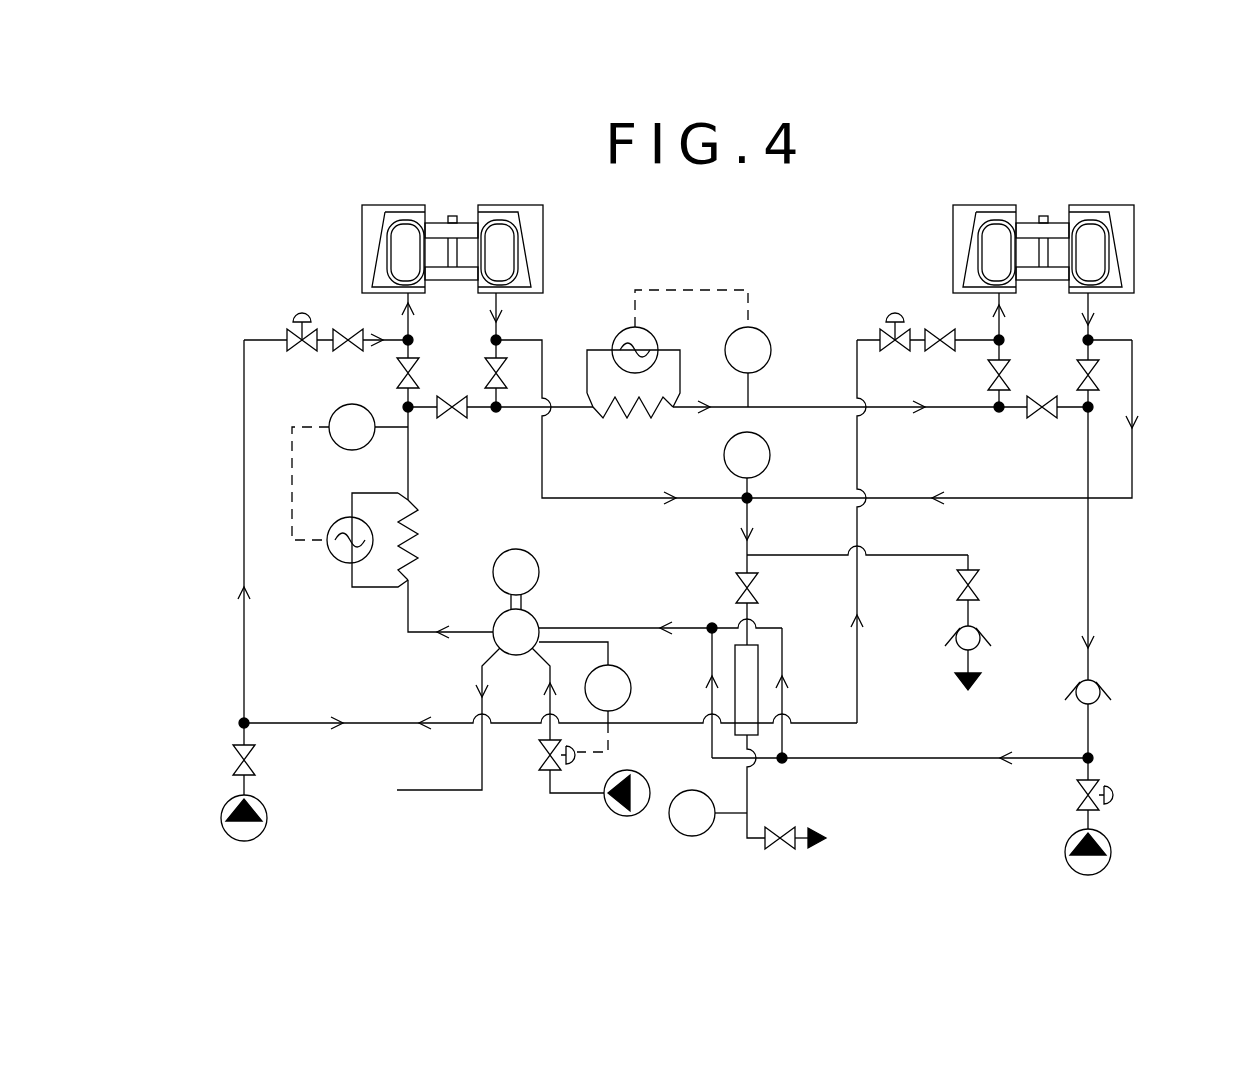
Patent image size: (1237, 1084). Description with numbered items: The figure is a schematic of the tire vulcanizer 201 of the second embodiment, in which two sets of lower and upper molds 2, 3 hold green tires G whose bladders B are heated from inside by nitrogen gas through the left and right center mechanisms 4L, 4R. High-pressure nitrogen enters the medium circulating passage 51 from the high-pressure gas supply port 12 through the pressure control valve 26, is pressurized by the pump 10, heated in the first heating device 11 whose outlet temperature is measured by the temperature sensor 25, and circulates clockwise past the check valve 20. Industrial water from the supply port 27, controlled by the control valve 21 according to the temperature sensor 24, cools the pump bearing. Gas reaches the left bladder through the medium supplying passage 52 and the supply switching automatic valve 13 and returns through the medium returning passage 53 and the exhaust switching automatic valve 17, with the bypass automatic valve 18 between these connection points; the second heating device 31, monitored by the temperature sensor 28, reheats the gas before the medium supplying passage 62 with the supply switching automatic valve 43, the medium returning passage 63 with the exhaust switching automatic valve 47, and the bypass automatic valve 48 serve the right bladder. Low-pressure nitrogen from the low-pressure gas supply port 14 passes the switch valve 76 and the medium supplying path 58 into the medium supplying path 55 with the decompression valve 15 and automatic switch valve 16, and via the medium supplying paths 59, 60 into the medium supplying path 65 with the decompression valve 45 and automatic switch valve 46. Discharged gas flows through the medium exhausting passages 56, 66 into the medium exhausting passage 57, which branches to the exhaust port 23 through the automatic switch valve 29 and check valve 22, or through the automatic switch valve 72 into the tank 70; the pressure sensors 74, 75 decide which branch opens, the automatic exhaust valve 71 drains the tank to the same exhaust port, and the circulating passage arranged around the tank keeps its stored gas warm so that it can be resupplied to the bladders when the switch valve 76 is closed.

The tire vulcanizer 201 is at (695, 245).
The lower mold 2 is at (684, 220).
The upper mold 3 is at (1088, 227).
The left center mechanism 4L is at (453, 214).
The right center mechanism 4R is at (1043, 214).
The green tire G is at (382, 240).
The bladder B is at (500, 250).
The pump 10 is at (496, 620).
The first heating device 11 is at (368, 589).
The high-pressure gas supply port 12 is at (1064, 853).
The low-pressure gas supply port 14 is at (268, 819).
The supply switching automatic valve 13 is at (399, 380).
The decompression valve 15 is at (292, 350).
The automatic switch valve 16 is at (334, 348).
The exhaust switching automatic valve 17 is at (489, 357).
The bypass automatic valve 18 is at (452, 418).
The check valve 20 is at (1075, 690).
The control valve 21 is at (540, 755).
The check valve 22 is at (952, 642).
The exhaust port 23 is at (955, 686).
The temperature sensor 24 is at (631, 676).
The temperature sensor 25 is at (337, 447).
The pressure control valve 26 is at (1117, 793).
The supply port 27 is at (606, 808).
The temperature sensor 28 is at (765, 330).
The automatic switch valve 29 is at (979, 582).
The second heating device 31 is at (600, 340).
The supply switching automatic valve 43 is at (989, 372).
The decompression valve 45 is at (896, 312).
The automatic switch valve 46 is at (940, 330).
The exhaust switching automatic valve 47 is at (1093, 395).
The bypass automatic valve 48 is at (1043, 420).
The medium circulating passage 51 is at (810, 410).
The medium supplying passage 52 is at (404, 325).
The medium returning passage 53 is at (500, 305).
The medium supplying path 55 is at (265, 338).
The medium exhausting passage 56 is at (595, 502).
The medium exhausting passage 57 is at (745, 520).
The medium supplying path 58 is at (243, 497).
The medium supplying path 59 is at (378, 726).
The medium supplying path 60 is at (855, 530).
The medium supplying passage 62 is at (1003, 305).
The medium returning passage 63 is at (1092, 305).
The medium supplying path 65 is at (856, 338).
The medium exhausting passage 66 is at (910, 496).
The tank 70 is at (760, 660).
The automatic exhaust valve 71 is at (782, 835).
The automatic switch valve 72 is at (736, 585).
The pressure sensor 74 is at (724, 455).
The pressure sensor 75 is at (688, 790).
The switch valve 76 is at (257, 762).